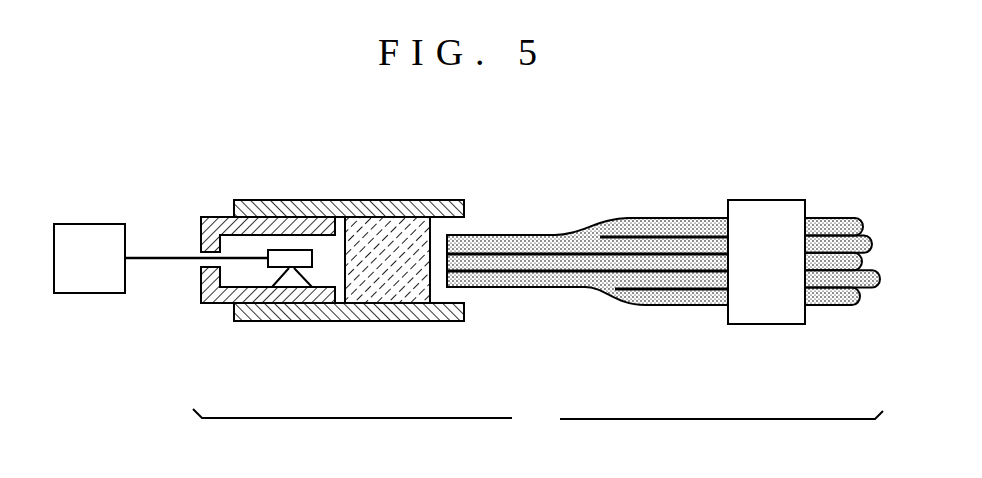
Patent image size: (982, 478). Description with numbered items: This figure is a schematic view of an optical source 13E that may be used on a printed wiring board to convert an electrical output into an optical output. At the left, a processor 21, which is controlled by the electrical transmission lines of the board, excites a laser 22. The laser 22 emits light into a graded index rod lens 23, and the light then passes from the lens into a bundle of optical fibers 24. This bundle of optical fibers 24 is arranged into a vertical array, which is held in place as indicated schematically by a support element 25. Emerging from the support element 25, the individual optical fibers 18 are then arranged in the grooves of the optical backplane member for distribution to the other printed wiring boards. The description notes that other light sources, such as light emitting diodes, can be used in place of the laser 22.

The processor 21 is at (96, 253).
The laser 22 is at (284, 251).
The graded index rod lens 23 is at (384, 223).
The bundle of optical fibers 24 is at (512, 238).
The support element 25 is at (776, 223).
The optical fibers 18 is at (863, 219).
The optical source 13E is at (538, 419).